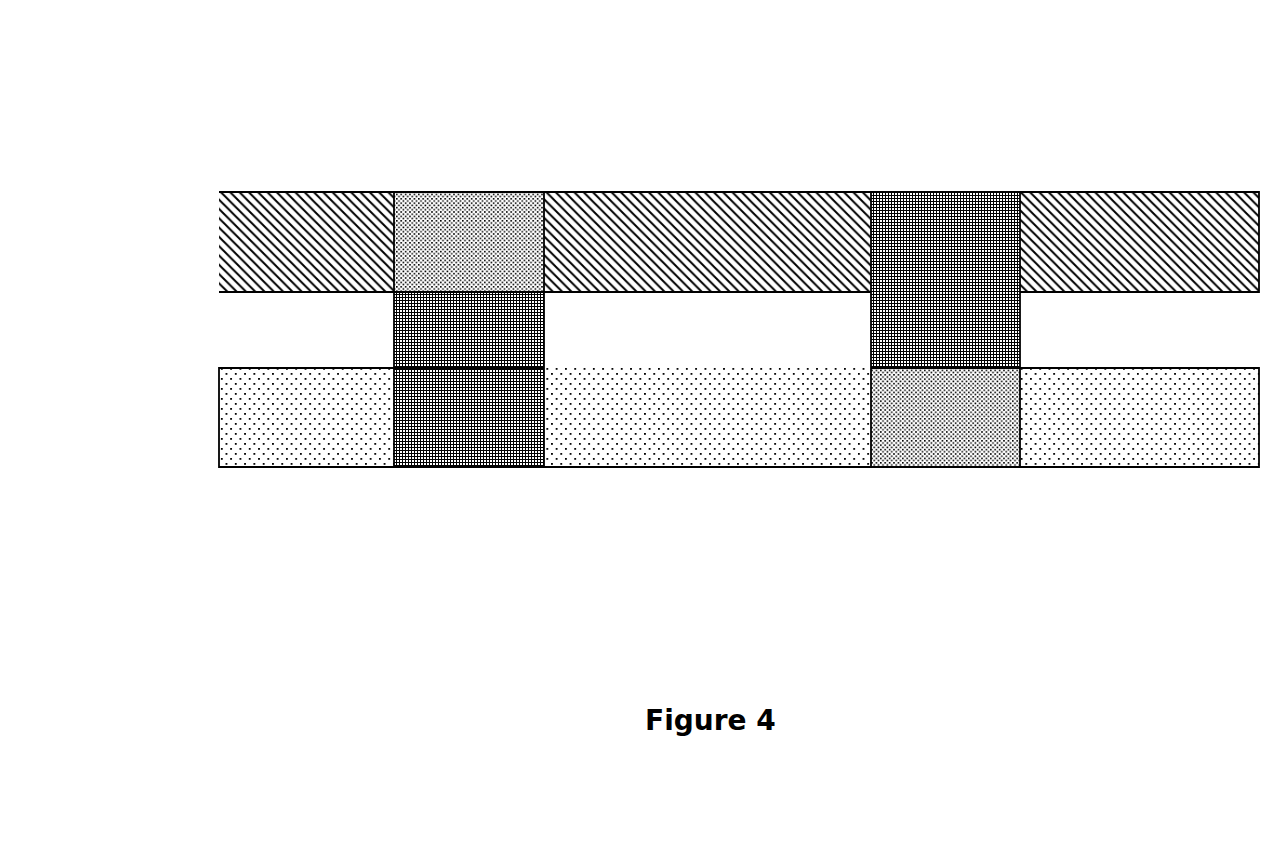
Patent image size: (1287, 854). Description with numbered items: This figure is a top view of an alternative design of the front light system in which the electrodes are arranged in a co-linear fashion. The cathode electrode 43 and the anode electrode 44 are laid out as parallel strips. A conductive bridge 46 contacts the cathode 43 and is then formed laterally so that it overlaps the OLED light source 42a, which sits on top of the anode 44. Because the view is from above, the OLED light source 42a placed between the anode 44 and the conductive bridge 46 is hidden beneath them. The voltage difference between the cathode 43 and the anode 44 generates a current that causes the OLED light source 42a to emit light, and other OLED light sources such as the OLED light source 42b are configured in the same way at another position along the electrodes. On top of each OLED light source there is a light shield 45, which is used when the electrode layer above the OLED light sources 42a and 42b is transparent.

The OLED light source 42a is at (507, 299).
The OLED light source 42b is at (990, 480).
The cathode electrode 43 is at (195, 417).
The anode electrode 44 is at (196, 242).
The light shield 45 is at (482, 190).
The conductive bridge 46 is at (494, 424).